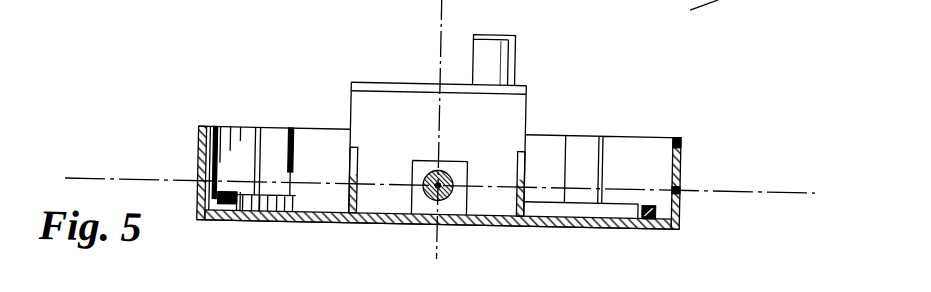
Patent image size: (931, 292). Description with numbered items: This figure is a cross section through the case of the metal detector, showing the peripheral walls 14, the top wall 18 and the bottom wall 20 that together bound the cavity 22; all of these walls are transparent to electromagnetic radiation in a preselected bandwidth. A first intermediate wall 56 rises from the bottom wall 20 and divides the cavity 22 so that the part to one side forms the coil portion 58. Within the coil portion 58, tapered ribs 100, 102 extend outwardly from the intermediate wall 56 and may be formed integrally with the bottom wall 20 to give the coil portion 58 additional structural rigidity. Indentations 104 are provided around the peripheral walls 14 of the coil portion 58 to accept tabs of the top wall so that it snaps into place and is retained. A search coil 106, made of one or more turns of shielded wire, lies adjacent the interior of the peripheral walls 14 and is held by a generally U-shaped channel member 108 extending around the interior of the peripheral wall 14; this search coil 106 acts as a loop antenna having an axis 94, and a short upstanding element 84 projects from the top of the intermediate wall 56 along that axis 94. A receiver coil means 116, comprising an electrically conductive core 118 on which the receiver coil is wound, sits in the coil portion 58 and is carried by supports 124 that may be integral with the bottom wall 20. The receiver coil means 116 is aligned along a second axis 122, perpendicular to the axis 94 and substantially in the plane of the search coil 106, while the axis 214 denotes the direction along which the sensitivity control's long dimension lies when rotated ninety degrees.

The peripheral walls 14 is at (680, 177).
The top wall 18 is at (381, 81).
The bottom wall 20 is at (328, 225).
The cavity 22 is at (559, 164).
The first intermediate wall 56 is at (358, 108).
The coil portion 58 is at (337, 166).
The inlet pipe 84 is at (513, 56).
The axis 94 is at (437, 27).
The tapered rib 100 is at (357, 174).
The tapered rib 102 is at (515, 179).
The indentations 104 is at (267, 140).
The search coil 106 is at (650, 201).
The U-shaped channel member 108 is at (628, 210).
The receiver coil means 116 is at (425, 205).
The core 118 is at (436, 160).
The second axis 122 is at (447, 197).
The supports 124 is at (450, 160).
The axis 214 is at (780, 186).